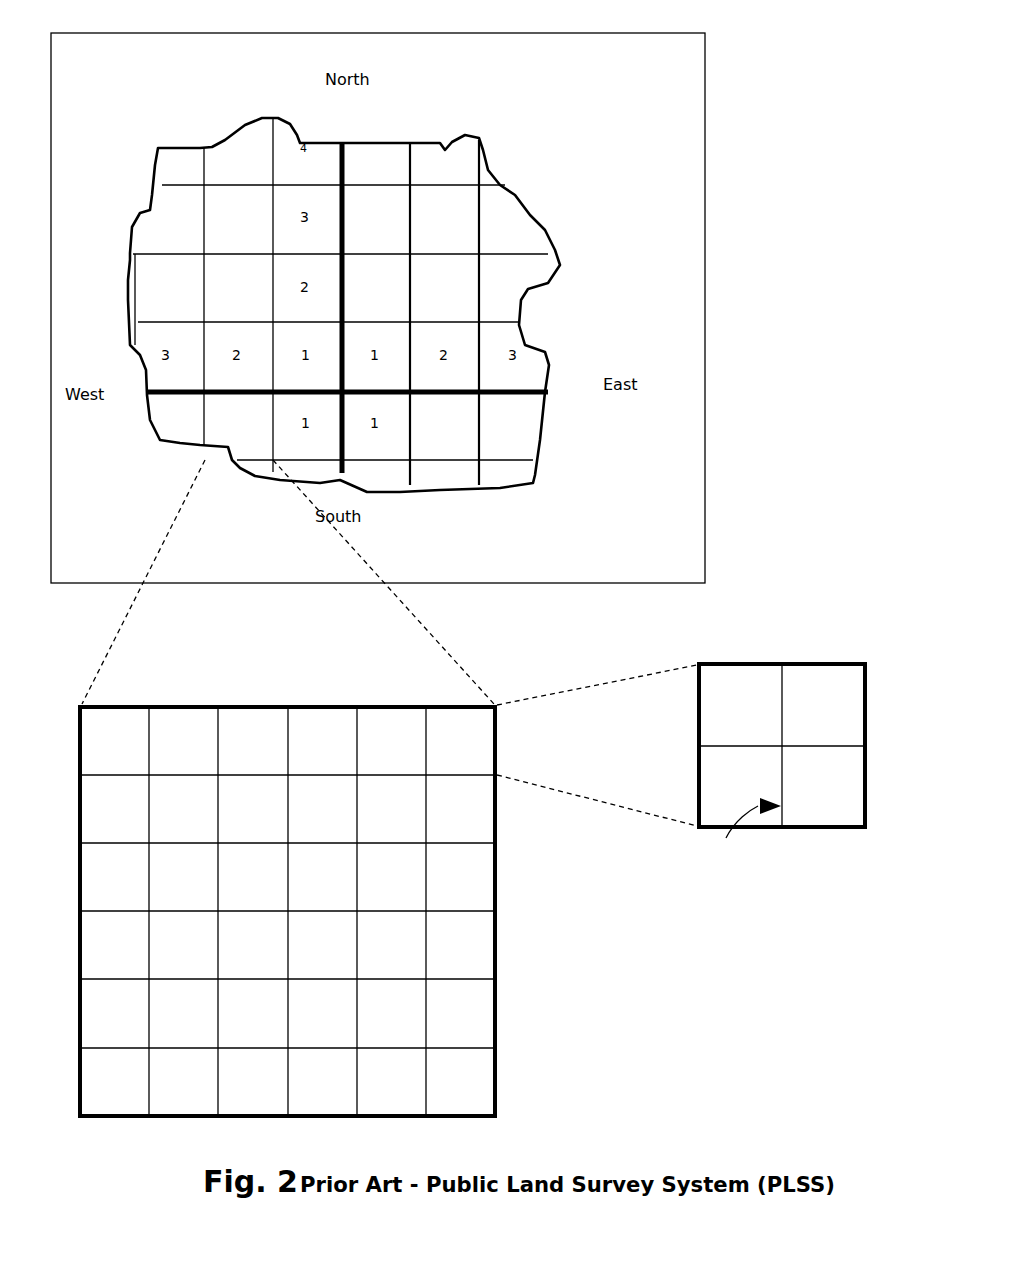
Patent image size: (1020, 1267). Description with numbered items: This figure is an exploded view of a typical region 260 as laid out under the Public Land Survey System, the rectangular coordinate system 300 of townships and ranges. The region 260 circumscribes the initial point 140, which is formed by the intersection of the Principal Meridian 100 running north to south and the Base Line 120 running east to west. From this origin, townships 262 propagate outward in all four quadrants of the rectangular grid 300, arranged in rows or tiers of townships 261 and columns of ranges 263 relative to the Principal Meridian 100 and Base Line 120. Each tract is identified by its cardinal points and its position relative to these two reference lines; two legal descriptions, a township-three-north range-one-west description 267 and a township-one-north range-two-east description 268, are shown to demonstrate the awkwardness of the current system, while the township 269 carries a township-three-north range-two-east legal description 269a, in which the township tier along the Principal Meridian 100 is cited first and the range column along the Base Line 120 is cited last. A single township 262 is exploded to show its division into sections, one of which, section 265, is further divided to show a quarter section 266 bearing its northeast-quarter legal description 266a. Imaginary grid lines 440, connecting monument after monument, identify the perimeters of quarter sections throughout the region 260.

The rectangular coordinate system 300 is at (730, 107).
The region 260 is at (142, 136).
The townships (row or tier) 261 is at (140, 239).
The legal description T3N R1W 267 is at (298, 215).
The legal description T1N R2E 268 is at (468, 335).
The Principal Meridian 100 is at (345, 135).
The Base Line 120 is at (552, 397).
The initial point 140 is at (348, 398).
The ranges (column) 263 is at (470, 152).
The township 269 is at (470, 215).
The legal description T3N R2E 269a is at (790, 200).
The imaginary grid lines 440 is at (520, 466).
The township 262 is at (215, 692).
The section 265 is at (447, 720).
The quarter section 266 is at (835, 680).
The legal description NE¼ Sec. 1, T1S R2W 266a is at (770, 612).